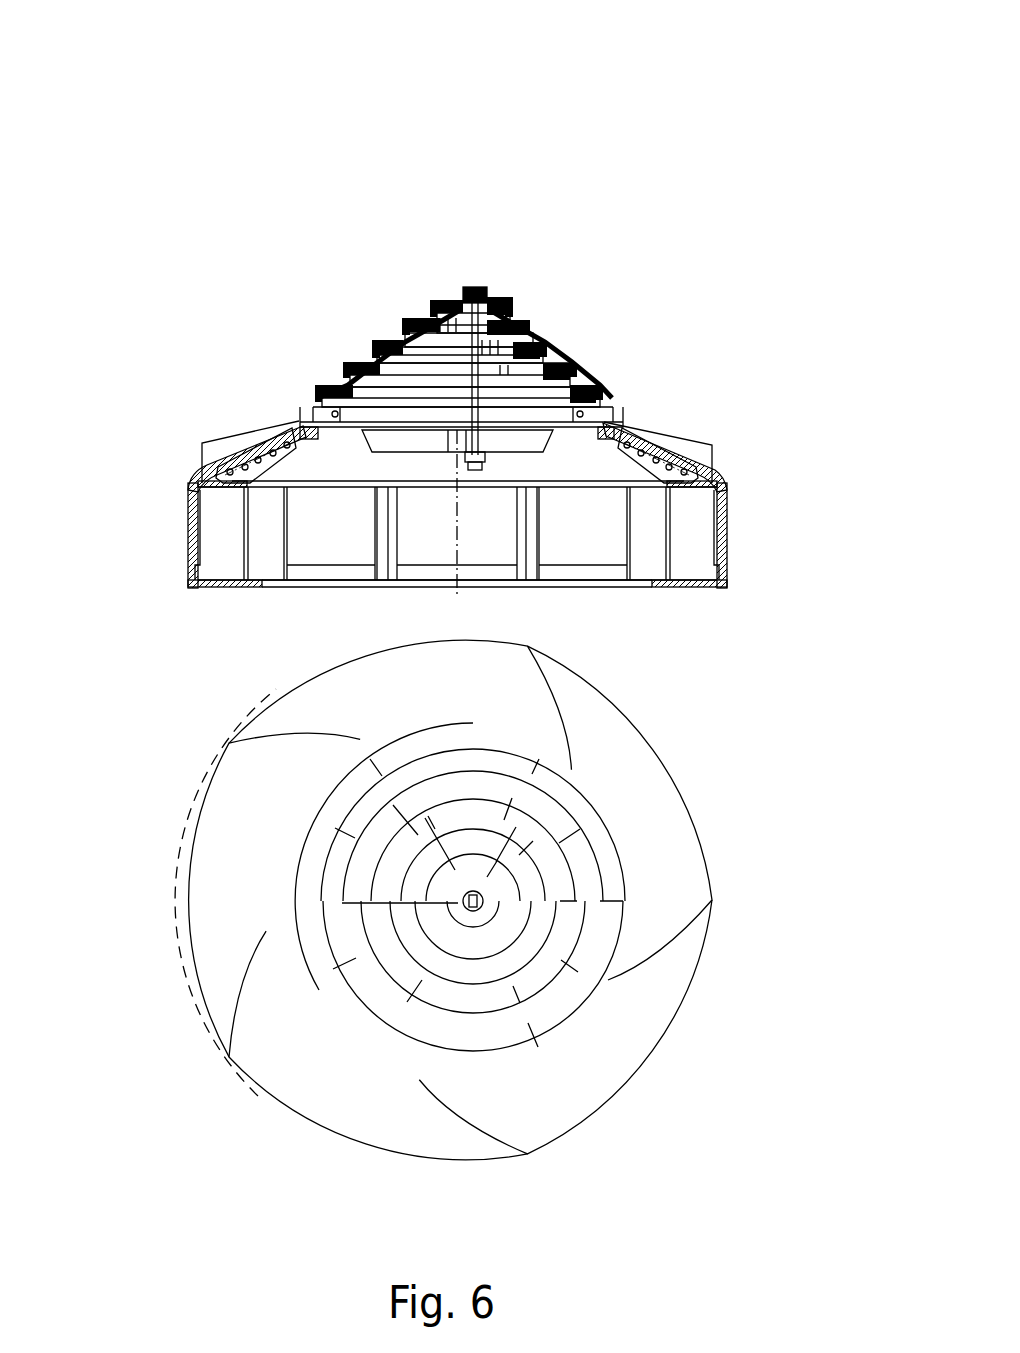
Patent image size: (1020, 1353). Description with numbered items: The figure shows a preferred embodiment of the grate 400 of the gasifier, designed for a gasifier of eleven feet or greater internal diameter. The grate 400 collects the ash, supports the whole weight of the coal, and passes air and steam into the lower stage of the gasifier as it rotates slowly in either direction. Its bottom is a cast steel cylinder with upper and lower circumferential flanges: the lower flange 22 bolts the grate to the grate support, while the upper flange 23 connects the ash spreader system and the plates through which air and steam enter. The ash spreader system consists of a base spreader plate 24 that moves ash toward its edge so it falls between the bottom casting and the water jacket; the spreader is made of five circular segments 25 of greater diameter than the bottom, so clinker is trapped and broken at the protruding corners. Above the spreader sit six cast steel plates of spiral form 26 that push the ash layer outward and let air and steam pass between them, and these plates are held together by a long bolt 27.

The grate 400 is at (788, 79).
The lower flange 22 is at (707, 590).
The upper flange 23 is at (723, 515).
The base spreader plate 24 is at (208, 530).
The circular segments 25 is at (193, 853).
The cast steel plates of spiral form 26 is at (615, 402).
The long bolt 27 is at (473, 287).